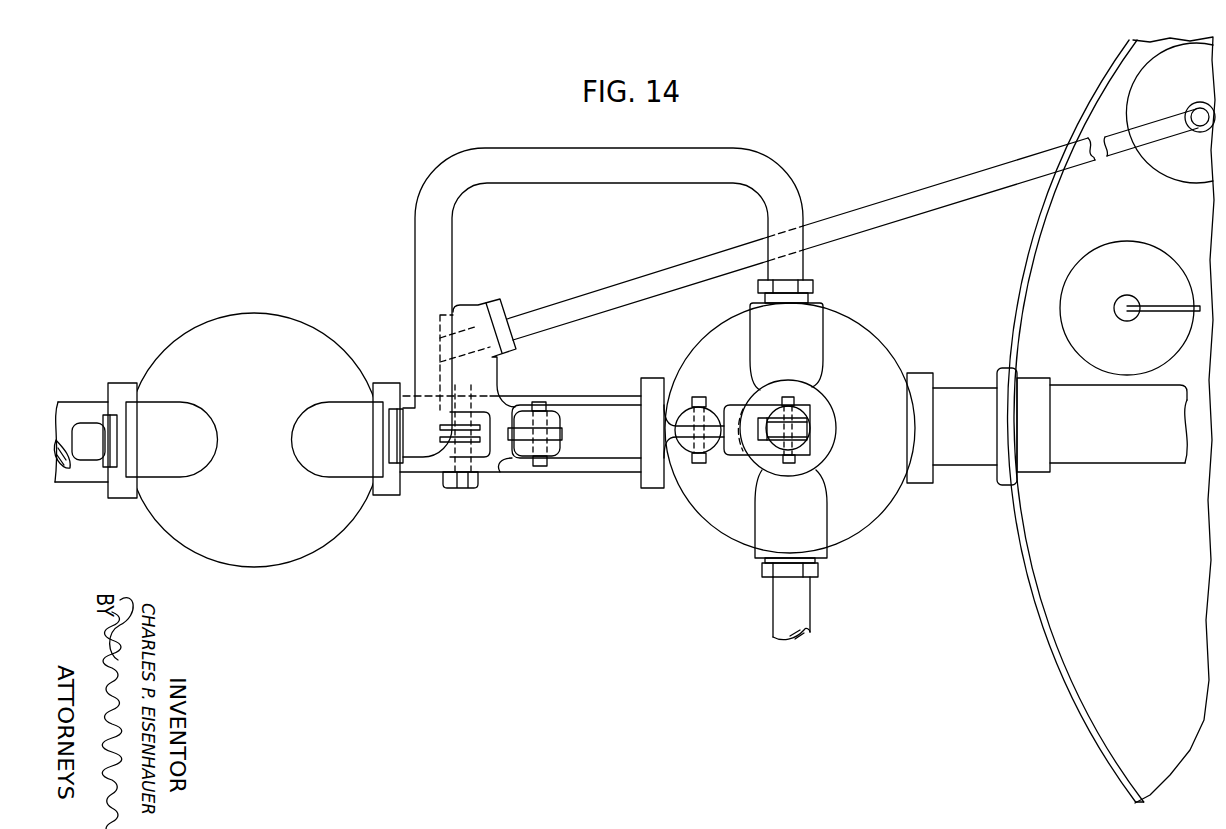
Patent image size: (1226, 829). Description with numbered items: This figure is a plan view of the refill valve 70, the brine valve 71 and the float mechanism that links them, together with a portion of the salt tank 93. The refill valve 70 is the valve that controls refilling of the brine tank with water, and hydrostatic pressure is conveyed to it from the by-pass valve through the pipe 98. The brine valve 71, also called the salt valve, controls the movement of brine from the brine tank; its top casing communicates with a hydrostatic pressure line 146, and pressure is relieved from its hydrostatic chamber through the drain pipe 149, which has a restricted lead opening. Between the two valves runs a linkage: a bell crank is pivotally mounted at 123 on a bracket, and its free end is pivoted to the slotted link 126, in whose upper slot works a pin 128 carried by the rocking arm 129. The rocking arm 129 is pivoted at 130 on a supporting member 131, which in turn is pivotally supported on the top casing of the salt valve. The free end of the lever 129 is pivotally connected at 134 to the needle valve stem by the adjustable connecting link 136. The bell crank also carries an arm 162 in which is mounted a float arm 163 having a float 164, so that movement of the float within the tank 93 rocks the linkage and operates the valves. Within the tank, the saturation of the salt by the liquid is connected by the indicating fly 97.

The refill valve 70 is at (345, 527).
The brine valve 71 is at (873, 523).
The salt tank 93 is at (1035, 607).
The indicating fly 97 is at (1127, 297).
The pipe 98 is at (90, 427).
The pivot 123 is at (460, 490).
The slotted link 126 is at (562, 433).
The pin 128 is at (539, 468).
The rocking arm 129 is at (609, 460).
The pivot 130 is at (705, 463).
The supporting member 131 is at (712, 407).
The pivot 134 is at (788, 463).
The adjustable connecting link 136 is at (810, 430).
The hydrostatic pressure line 146 is at (782, 165).
The drain pipe 149 is at (812, 600).
The arm 162 is at (495, 370).
The float arm 163 is at (625, 300).
The float 164 is at (1147, 163).